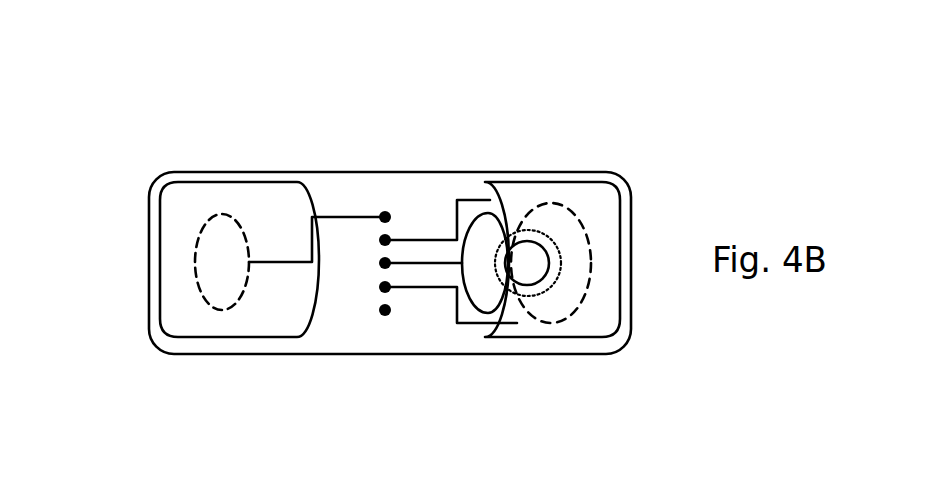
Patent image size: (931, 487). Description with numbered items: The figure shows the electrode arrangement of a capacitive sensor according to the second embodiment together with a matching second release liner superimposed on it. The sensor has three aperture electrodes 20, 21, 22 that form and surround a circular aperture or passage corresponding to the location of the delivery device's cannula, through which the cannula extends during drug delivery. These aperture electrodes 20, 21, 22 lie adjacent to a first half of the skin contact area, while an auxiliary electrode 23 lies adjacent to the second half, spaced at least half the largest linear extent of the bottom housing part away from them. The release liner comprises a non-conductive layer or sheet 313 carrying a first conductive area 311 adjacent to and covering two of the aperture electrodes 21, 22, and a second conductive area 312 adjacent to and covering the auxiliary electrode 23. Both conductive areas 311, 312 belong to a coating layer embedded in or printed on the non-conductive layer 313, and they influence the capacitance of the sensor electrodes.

The aperture electrode 20 is at (488, 213).
The aperture electrode 21 is at (527, 217).
The aperture electrode 22 is at (535, 313).
The auxiliary electrode 23 is at (207, 270).
The first conductive area 311 is at (600, 185).
The second conductive area 312 is at (218, 184).
The non-conductive layer 313 is at (328, 172).